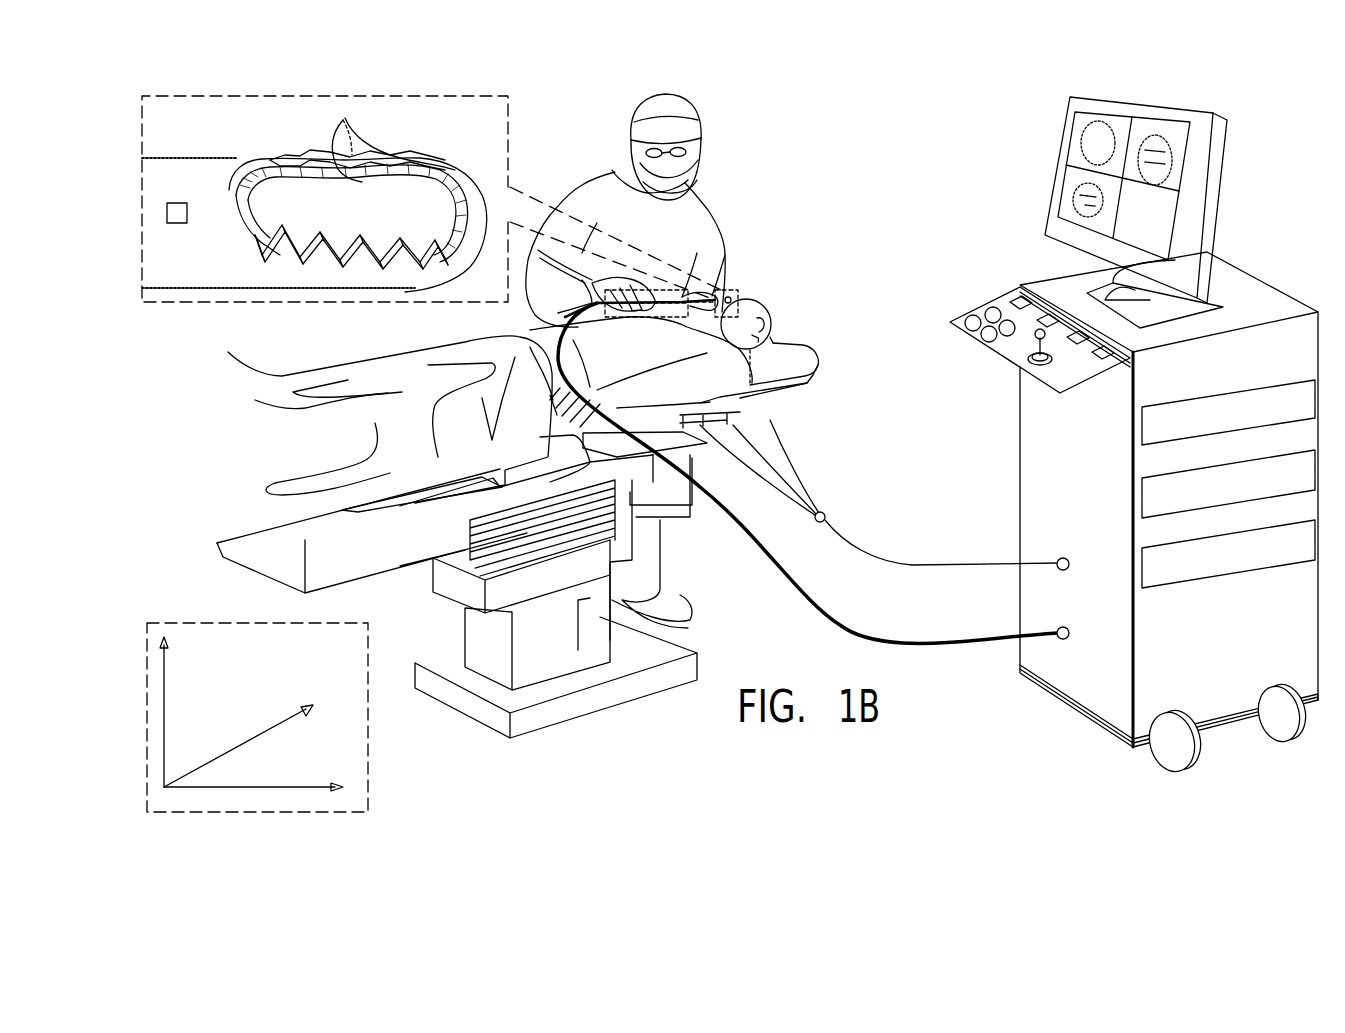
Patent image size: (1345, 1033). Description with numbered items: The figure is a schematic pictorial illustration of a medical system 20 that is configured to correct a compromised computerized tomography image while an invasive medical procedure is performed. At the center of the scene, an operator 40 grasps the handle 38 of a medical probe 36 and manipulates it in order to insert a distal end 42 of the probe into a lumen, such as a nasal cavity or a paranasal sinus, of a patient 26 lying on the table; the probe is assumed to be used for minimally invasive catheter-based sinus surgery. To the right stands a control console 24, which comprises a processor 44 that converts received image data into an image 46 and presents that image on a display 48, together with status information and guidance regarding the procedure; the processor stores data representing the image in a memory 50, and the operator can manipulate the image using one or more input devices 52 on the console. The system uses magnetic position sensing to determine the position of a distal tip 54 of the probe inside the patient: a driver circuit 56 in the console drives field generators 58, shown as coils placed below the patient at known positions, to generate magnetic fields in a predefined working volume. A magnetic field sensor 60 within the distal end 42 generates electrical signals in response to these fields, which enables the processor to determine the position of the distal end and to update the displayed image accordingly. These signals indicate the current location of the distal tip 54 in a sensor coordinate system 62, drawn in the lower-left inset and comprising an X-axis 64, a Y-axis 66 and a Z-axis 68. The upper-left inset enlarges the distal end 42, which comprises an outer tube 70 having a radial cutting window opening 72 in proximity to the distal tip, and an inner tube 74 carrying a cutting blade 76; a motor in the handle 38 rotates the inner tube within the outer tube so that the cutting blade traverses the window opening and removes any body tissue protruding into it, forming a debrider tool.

The medical system 20 is at (975, 90).
The control console 24 is at (1250, 282).
The patient 26 is at (372, 360).
The medical probe 36 is at (740, 285).
The handle 38 is at (688, 318).
The operator 40 is at (678, 118).
The distal end 42 is at (448, 120).
The processor 44 is at (1142, 426).
The image 46 is at (1065, 192).
The display 48 is at (1218, 155).
The memory 50 is at (1142, 500).
The input devices 52 is at (988, 318).
The distal tip 54 is at (480, 238).
The driver circuit 56 is at (1142, 574).
The field generators 58 is at (778, 408).
The magnetic field sensor 60 is at (178, 223).
The sensor coordinate system 62 is at (368, 730).
The X-axis 64 is at (262, 730).
The Y-axis 66 is at (164, 708).
The Z-axis 68 is at (253, 790).
The outer tube 70 is at (184, 157).
The radial cutting window opening 72 is at (334, 216).
The inner tube 74 is at (256, 172).
The cutting blade 76 is at (393, 137).